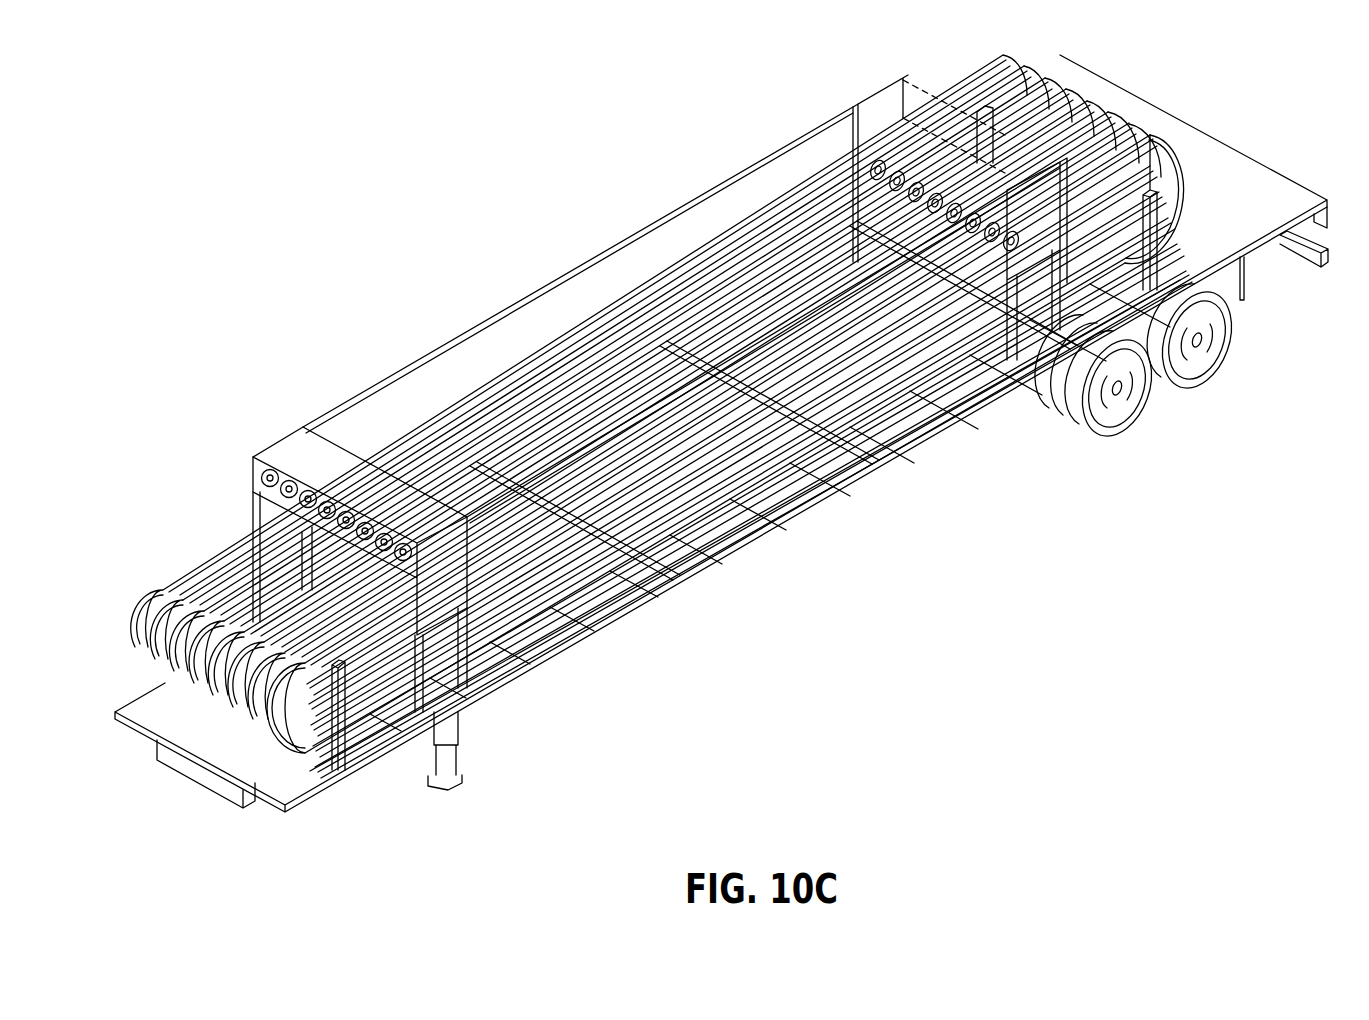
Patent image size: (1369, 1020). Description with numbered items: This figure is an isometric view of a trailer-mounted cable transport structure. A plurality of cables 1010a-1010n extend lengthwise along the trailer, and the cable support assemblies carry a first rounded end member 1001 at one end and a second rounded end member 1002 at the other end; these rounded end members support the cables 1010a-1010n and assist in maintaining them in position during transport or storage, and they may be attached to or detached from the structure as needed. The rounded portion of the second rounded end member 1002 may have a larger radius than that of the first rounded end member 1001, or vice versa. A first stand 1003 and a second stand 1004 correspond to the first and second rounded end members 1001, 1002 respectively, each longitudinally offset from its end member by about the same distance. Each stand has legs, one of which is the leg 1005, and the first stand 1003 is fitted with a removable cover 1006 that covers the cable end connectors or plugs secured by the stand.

The first rounded end member 1001 is at (160, 602).
The second rounded end member 1002 is at (1180, 183).
The first stand 1003 is at (290, 447).
The second stand 1004 is at (880, 92).
The leg 1005 is at (1100, 313).
The removable cover 1006 is at (342, 462).
The cable 1010a is at (540, 318).
The cable 1010n is at (840, 437).